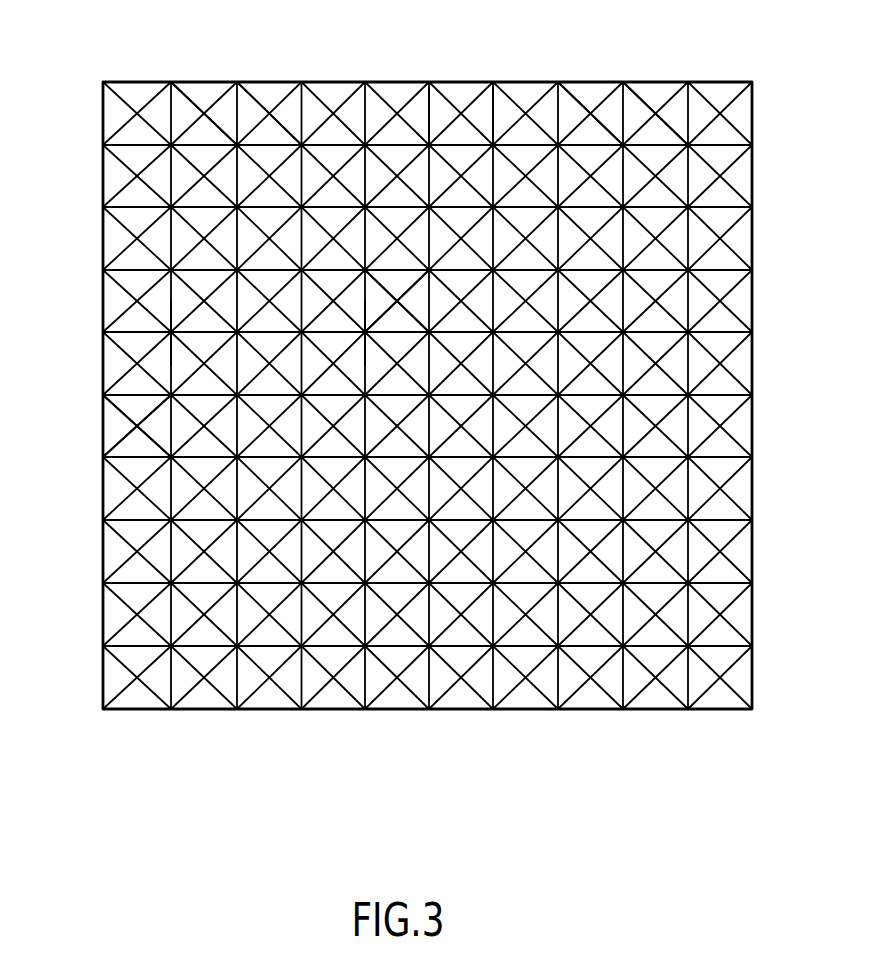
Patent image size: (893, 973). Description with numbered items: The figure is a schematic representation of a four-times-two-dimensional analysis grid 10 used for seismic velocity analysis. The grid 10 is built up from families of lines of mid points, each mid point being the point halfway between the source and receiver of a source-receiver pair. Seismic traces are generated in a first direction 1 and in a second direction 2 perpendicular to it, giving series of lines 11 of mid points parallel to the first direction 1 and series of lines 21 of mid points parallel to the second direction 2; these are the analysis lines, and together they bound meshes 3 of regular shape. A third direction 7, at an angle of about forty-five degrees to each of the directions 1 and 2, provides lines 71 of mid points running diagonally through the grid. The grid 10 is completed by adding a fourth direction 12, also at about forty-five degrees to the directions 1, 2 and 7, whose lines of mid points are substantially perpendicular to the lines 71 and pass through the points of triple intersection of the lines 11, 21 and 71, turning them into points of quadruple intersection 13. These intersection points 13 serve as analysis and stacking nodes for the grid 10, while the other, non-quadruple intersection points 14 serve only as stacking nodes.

The 4×2D analysis grid 10 is at (360, 720).
The first direction 1 is at (768, 72).
The second direction 2 is at (30, 12).
The mesh 3 is at (458, 95).
The third direction 7 is at (757, 393).
The lines of mid points parallel to the first direction 11 is at (603, 102).
The fourth direction 12 is at (170, 332).
The points of quadruple intersection 13 is at (363, 334).
The non-quadruple intersection points 14 is at (397, 298).
The lines of mid points parallel to the second direction 21 is at (190, 97).
The lines of mid points parallel to the third direction 71 is at (716, 270).